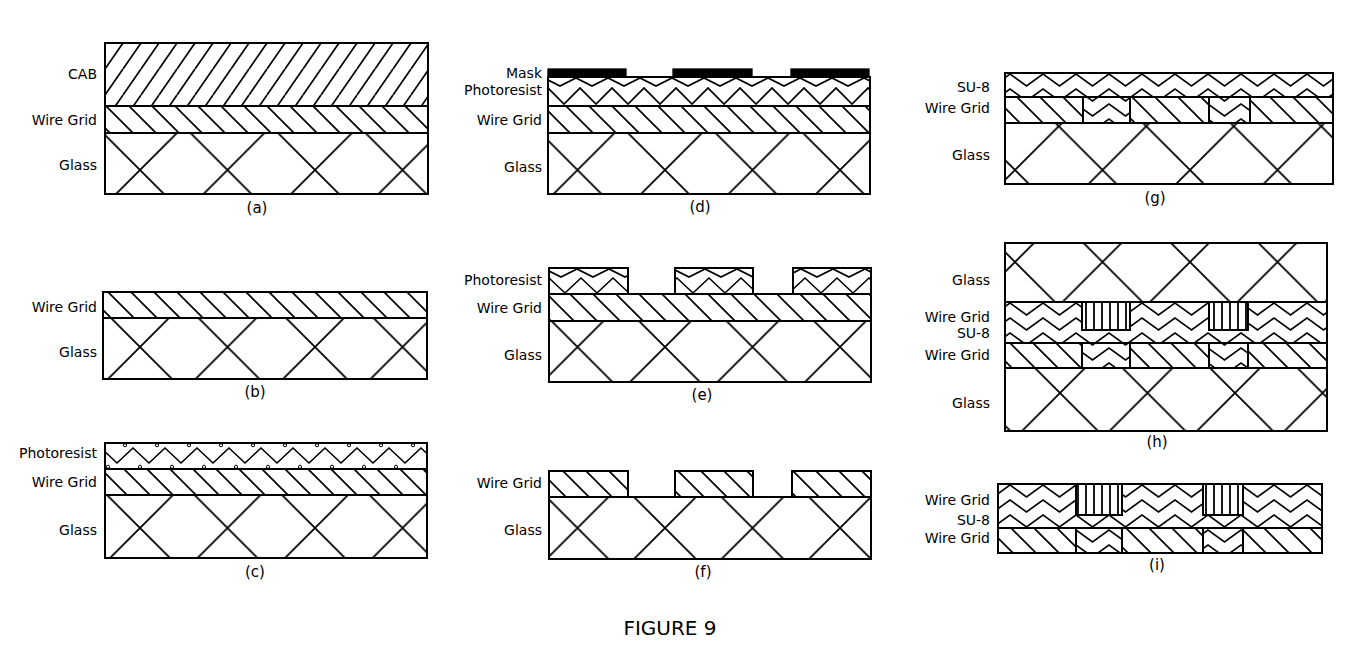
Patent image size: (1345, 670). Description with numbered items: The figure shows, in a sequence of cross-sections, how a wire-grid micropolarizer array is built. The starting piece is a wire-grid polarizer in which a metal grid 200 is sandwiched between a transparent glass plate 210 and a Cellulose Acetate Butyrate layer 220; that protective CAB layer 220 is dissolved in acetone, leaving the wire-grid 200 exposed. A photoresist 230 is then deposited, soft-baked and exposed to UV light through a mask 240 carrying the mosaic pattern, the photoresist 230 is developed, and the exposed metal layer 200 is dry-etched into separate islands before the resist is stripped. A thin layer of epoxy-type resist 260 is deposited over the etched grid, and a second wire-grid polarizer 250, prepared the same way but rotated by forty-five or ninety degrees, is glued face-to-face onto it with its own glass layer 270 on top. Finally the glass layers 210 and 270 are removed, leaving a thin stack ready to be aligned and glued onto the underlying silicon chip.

The metal grid 200 is at (718, 349).
The transparent glass plate 210 is at (718, 341).
The Cellulose Acetate Butyrate (CAB) layer 220 is at (290, 74).
The photoresist 230 is at (515, 261).
The mask 240 is at (708, 51).
The second wire-grid polarizer 250 is at (1094, 402).
The SU-8 resist layer 260 is at (1116, 300).
The glass layer 270 is at (1141, 264).